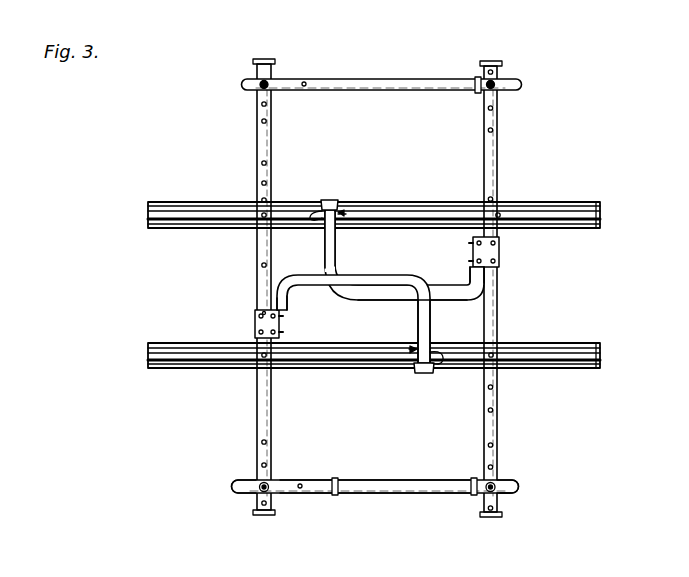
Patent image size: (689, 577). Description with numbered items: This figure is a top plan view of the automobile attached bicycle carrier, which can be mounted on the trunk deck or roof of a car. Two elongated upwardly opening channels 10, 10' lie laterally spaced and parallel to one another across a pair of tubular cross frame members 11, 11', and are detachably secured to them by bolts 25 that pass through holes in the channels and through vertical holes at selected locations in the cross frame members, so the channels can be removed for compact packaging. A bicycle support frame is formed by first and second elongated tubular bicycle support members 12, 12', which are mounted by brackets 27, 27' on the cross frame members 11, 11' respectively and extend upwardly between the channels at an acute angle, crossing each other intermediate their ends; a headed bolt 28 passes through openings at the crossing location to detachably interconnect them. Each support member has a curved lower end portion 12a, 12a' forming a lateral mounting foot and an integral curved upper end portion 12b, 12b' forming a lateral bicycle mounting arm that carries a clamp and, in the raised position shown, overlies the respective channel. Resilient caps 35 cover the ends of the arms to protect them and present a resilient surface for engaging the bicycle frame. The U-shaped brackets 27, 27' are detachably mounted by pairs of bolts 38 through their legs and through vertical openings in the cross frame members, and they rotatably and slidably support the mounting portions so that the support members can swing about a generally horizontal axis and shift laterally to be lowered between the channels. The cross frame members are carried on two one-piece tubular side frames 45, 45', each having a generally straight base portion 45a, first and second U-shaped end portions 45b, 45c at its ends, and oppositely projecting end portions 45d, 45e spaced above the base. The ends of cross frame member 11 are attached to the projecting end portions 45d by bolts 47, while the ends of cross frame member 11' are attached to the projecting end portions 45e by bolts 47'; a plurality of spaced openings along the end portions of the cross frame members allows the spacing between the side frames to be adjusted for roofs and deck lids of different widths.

The channel 10 is at (387, 230).
The channel 10' is at (376, 373).
The cross frame member 11 is at (521, 289).
The cross frame member 11' is at (223, 287).
The elongated bicycle support member 12 is at (373, 319).
The elongated bicycle support member 12' is at (404, 255).
The lower end portion 12a is at (452, 267).
The lower end portion 12a' is at (308, 314).
The upper end portion 12b is at (309, 242).
The upper end portion 12b' is at (405, 331).
The bolt 25 is at (494, 219).
The bracket 27 is at (511, 252).
The bracket 27' is at (231, 324).
The headed bolt 28 is at (378, 301).
The resilient cap 35 is at (331, 200).
The bolt 38 is at (260, 311).
The side frame 45 is at (375, 466).
The side frame 45' is at (382, 62).
The base portion 45a is at (380, 495).
The U-shaped end portion 45b is at (520, 487).
The U-shaped end portion 45c is at (232, 487).
The projecting end portion 45d is at (505, 494).
The projecting end portion 45e is at (312, 480).
The bolt 47 is at (520, 467).
The bolt 47' is at (220, 504).